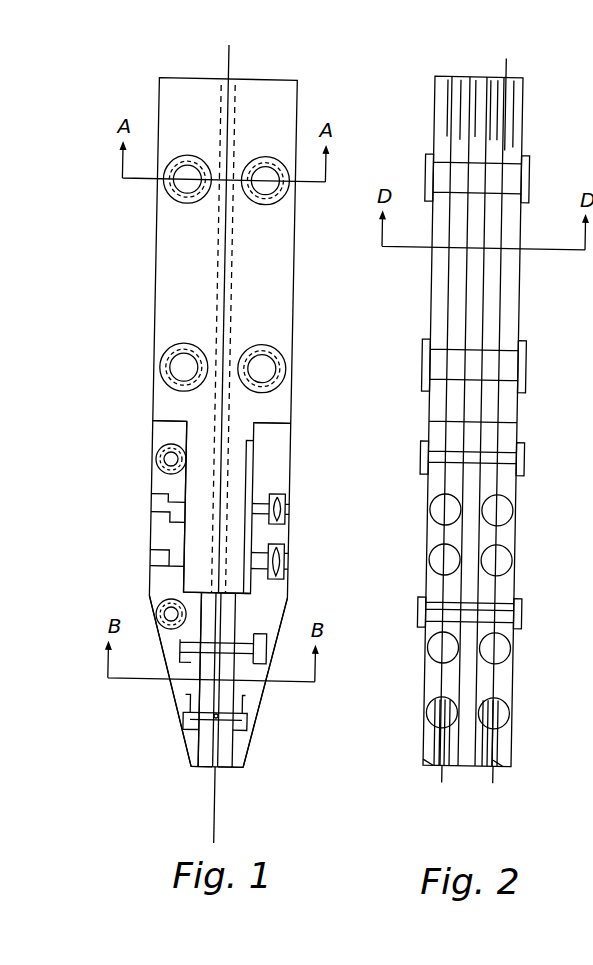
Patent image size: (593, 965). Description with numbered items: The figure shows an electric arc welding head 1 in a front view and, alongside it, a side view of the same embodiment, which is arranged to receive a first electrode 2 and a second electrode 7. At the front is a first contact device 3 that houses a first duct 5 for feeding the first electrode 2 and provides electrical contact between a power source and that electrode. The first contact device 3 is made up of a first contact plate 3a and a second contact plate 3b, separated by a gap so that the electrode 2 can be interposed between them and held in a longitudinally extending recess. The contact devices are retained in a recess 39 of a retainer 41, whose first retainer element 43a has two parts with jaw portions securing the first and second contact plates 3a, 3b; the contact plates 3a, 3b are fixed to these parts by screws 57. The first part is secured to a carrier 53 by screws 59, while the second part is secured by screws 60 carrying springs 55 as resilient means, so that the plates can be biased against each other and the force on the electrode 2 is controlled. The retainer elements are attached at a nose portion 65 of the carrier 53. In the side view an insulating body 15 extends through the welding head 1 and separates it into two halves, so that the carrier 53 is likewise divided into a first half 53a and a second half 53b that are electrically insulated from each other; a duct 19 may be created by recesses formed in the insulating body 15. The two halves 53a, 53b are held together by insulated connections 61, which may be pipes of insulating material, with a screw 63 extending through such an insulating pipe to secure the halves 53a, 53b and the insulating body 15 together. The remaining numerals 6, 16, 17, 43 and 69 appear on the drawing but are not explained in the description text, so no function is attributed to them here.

In FIG. 1, the electric arc welding head 1 is at (114, 263).
In FIG. 2, the electric arc welding head 1 is at (557, 807).
In FIG. 1, the first electrode 2 is at (222, 812).
In FIG. 1, the first contact device 3 is at (203, 752).
In FIG. 1, the first contact plate 3a is at (203, 698).
In FIG. 1, the second contact plate 3b is at (228, 696).
In FIG. 1, the first duct 5 is at (210, 777).
In FIG. 2, the wire element 6 is at (589, 831).
In FIG. 2, the second electrode 7 is at (390, 953).
In FIG. 2, the insulating body 15 is at (487, 80).
In FIG. 1, the wire 16 is at (193, 770).
In FIG. 2, the wire 16 is at (443, 768).
In FIG. 1, the shaft strip 17 is at (275, 79).
In FIG. 2, the shaft strip 17 is at (454, 70).
In FIG. 1, the duct 19 is at (220, 728).
In FIG. 2, the duct 19 is at (585, 767).
In FIG. 1, the recess 39 is at (235, 620).
In FIG. 1, the retainer 41 is at (265, 432).
In FIG. 2, the spring element 43 is at (507, 767).
In FIG. 1, the first retainer element 43a is at (163, 483).
In FIG. 2, the first retainer element 43a is at (430, 760).
In FIG. 1, the carrier 53 is at (173, 106).
In FIG. 2, the carrier 53 is at (538, 116).
In FIG. 2, the first carrier half 53a is at (447, 113).
In FIG. 2, the second carrier half 53b is at (517, 147).
In FIG. 1, the springs 55 is at (288, 514).
In FIG. 1, the screws 57 is at (267, 650).
In FIG. 1, the screws 59 is at (158, 508).
In FIG. 1, the screws 60 is at (288, 503).
In FIG. 1, the insulated connections 61 is at (170, 200).
In FIG. 2, the insulated connections 61 is at (525, 347).
In FIG. 2, the screw 63 is at (428, 183).
In FIG. 1, the nose portion 65 is at (197, 550).
In FIG. 2, the guide 69 is at (584, 685).